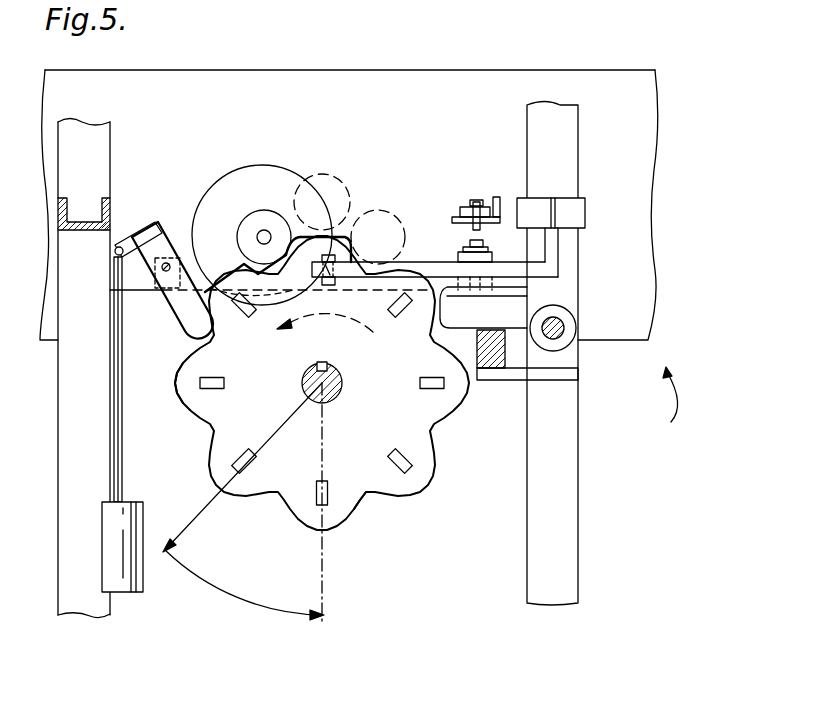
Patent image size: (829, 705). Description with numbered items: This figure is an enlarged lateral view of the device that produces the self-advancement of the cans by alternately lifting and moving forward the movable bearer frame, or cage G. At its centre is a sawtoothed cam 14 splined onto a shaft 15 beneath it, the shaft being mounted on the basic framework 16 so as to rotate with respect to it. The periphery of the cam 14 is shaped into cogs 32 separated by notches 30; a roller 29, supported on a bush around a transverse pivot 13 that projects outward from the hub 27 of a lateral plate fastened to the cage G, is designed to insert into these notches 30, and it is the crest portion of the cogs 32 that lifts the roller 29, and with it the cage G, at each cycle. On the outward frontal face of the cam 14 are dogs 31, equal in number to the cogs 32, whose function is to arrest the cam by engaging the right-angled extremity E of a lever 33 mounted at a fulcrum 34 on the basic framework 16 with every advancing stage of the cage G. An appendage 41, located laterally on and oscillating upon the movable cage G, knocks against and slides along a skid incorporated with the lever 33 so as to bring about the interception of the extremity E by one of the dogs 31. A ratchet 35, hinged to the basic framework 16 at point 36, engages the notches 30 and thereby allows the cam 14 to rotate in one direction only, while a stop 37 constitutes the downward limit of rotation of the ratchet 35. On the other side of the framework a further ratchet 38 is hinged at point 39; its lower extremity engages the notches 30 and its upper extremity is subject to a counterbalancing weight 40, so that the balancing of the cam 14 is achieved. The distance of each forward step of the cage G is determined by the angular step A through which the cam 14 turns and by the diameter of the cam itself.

The transverse pivot 13 is at (264, 237).
The sawtoothed cam 14 is at (342, 493).
The shaft 15 is at (303, 386).
The basic framework 16 is at (572, 512).
The hub 27 is at (220, 200).
The roller 29 is at (258, 233).
The peripheral notches 30 is at (200, 432).
The dogs 31 is at (408, 322).
The cogs 32 is at (232, 495).
The lever 33 is at (430, 262).
The fulcrum 34 is at (480, 243).
The ratchet 35 is at (527, 300).
The hinge point 36 is at (556, 331).
The stop 37 is at (492, 355).
The further ratchet 38 is at (185, 308).
The hinge point 39 is at (180, 225).
The counterbalancing weight 40 is at (130, 578).
The appendage 41 is at (487, 197).
The angular step A is at (238, 603).
The extremity of lever E is at (283, 312).
The cage G is at (665, 401).